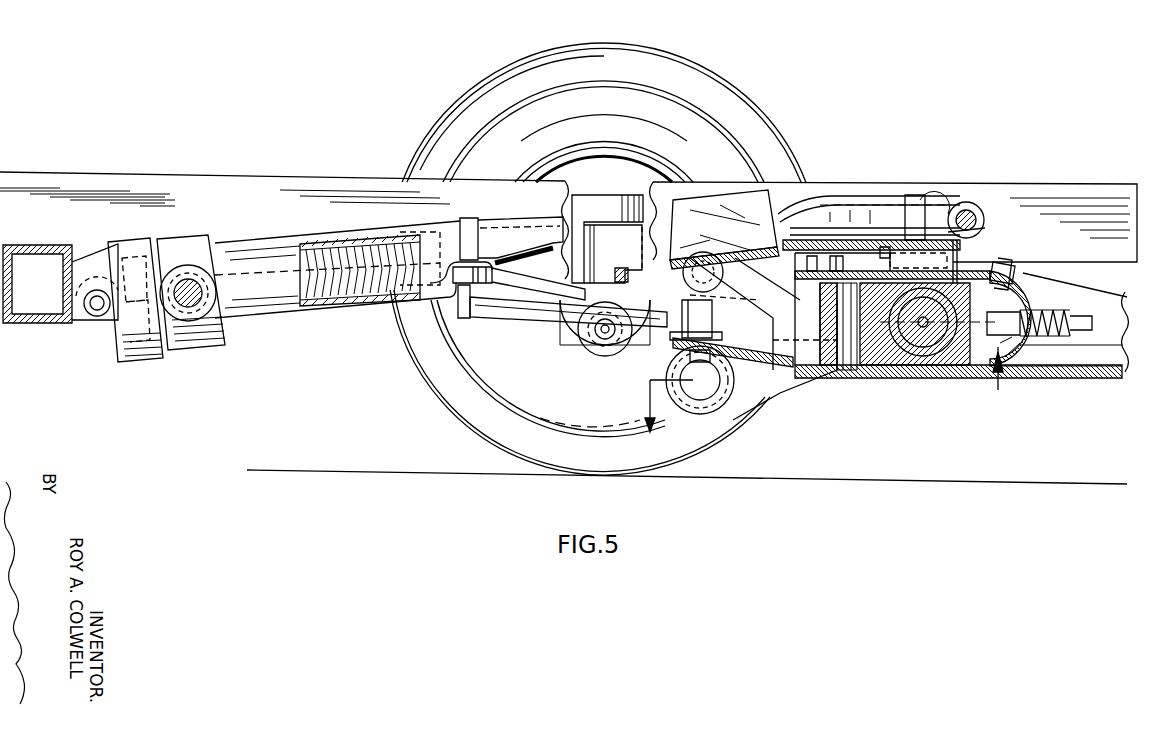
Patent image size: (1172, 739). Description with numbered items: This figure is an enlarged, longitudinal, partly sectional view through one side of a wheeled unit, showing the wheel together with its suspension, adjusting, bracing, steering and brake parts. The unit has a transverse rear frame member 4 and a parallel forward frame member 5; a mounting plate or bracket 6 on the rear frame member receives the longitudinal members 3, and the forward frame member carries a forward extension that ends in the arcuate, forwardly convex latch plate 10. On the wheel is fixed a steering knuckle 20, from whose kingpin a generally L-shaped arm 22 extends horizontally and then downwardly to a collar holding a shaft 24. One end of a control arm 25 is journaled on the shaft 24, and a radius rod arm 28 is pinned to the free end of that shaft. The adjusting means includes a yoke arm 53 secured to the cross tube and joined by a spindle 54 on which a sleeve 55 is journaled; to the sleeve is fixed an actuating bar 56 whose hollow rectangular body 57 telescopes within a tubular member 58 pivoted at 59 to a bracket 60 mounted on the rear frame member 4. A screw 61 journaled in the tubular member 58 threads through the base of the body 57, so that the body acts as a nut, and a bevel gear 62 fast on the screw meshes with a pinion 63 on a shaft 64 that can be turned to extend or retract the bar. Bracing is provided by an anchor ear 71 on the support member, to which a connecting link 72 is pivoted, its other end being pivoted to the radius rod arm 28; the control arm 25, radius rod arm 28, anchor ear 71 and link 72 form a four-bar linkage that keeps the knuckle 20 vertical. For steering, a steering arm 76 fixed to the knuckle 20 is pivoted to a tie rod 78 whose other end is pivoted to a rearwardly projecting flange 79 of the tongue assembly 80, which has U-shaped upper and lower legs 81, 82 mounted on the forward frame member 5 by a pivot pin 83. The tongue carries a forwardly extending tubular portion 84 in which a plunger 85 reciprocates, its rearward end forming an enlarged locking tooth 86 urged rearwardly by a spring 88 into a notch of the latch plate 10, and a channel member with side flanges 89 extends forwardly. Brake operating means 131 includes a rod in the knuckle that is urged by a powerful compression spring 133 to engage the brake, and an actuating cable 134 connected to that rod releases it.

The members 3 is at (1080, 192).
The rear frame member 4 is at (22, 325).
The forward frame member 5 is at (884, 372).
The mounting plate or bracket 6 is at (824, 402).
The latch plate 10 is at (975, 328).
The steering knuckle 20 is at (600, 205).
The L-shaped arm 22 is at (660, 290).
The shaft 24 is at (698, 405).
The control arm 25 is at (800, 375).
The radius rod arm 28 is at (742, 302).
The arm 53 is at (955, 255).
The spindle 54 is at (978, 208).
The sleeve 55 is at (988, 230).
The actuating bar 56 is at (822, 200).
The hollow rectangular body 57 is at (496, 223).
The tubular member 58 is at (246, 262).
The pivot 59 is at (96, 312).
The bracket 60 is at (75, 270).
The screw 61 is at (332, 310).
The bevel gear 62 is at (168, 262).
The pinion 63 is at (228, 330).
The shaft 64 is at (192, 328).
The anchor ear 71 is at (849, 253).
The connecting link 72 is at (848, 212).
The steering arm 76 is at (536, 292).
The tie rod 78 is at (520, 322).
The rearwardly projecting flange 79 is at (738, 345).
The tongue assembly 80 is at (1052, 378).
The upper leg 81 is at (812, 260).
The lower leg 82 is at (934, 376).
The pivot pin 83 is at (845, 376).
The tubular portion 84 is at (1060, 318).
The plunger 85 is at (1086, 324).
The locking tooth 86 is at (1000, 312).
The spring 88 is at (1013, 337).
The side flanges 89 is at (1113, 300).
The brake operating means 131 is at (562, 348).
The compression spring 133 is at (600, 340).
The actuating cable 134 is at (608, 340).